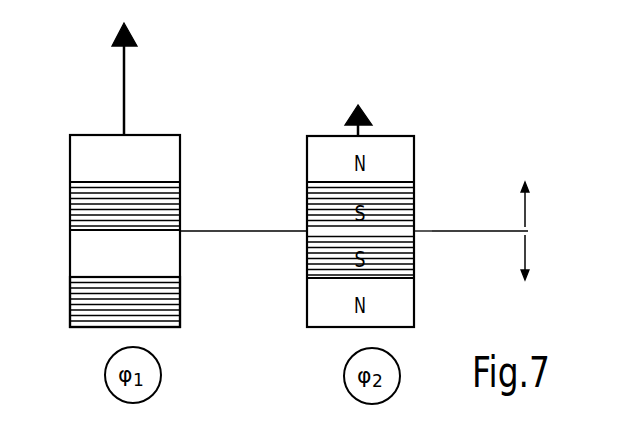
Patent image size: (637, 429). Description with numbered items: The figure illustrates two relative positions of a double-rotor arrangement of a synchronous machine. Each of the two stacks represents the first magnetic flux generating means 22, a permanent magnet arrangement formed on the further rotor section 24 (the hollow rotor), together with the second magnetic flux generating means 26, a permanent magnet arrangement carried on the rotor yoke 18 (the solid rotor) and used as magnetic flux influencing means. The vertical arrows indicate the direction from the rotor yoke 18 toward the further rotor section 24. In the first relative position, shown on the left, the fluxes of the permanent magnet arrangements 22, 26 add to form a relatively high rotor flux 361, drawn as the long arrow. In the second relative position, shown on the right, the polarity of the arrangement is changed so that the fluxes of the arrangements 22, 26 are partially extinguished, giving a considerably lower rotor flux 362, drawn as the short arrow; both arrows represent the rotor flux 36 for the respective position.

The first magnetic flux generating means 22 is at (160, 203).
The second magnetic flux generating means 26 is at (165, 298).
The rotor flux 36 is at (247, 72).
The rotor flux in first relative position 361 is at (124, 98).
The rotor flux in second relative position 362 is at (362, 130).
The further rotor section 24 is at (499, 204).
The rotor yoke 18 is at (543, 262).